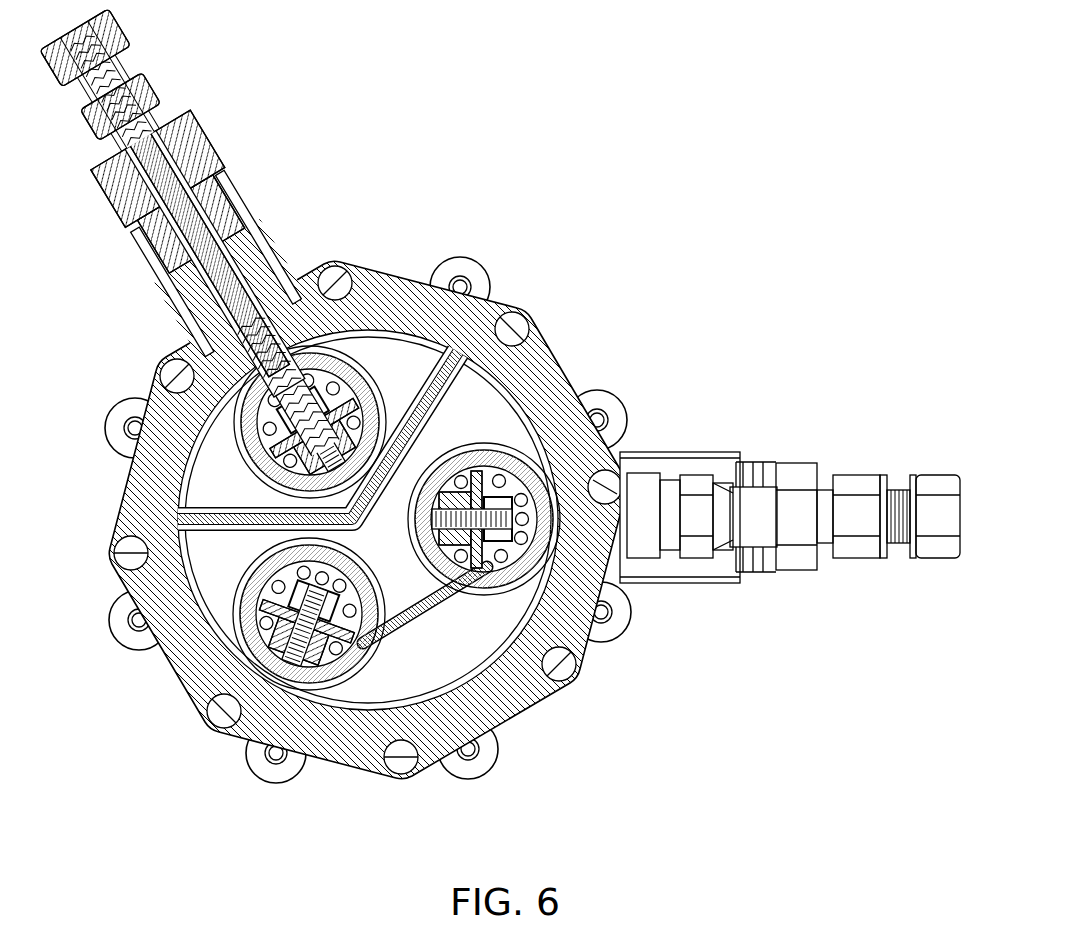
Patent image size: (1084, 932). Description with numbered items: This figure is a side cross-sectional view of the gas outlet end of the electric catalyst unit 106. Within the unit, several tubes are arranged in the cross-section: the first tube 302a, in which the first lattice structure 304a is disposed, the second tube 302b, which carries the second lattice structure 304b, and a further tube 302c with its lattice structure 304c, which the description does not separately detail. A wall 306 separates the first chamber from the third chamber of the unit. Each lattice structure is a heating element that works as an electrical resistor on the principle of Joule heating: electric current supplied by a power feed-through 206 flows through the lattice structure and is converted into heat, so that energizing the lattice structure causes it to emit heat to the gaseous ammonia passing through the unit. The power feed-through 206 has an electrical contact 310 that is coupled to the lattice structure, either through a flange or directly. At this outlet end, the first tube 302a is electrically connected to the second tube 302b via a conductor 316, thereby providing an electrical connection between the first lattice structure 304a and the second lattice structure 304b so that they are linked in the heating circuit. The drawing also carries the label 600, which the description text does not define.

The electric catalyst unit 106 is at (618, 270).
The power feed-through 206 is at (152, 92).
The first tube 302a is at (520, 568).
The second tube 302b is at (290, 672).
The valve cartridge 302c is at (343, 363).
The first lattice structure 304a is at (545, 576).
The second lattice structure 304b is at (285, 660).
The seat ring 304c is at (360, 390).
The wall 306 is at (430, 400).
The electrical contact 310 is at (300, 392).
The conductor 316 is at (375, 612).
The cavity wall 600 is at (480, 677).